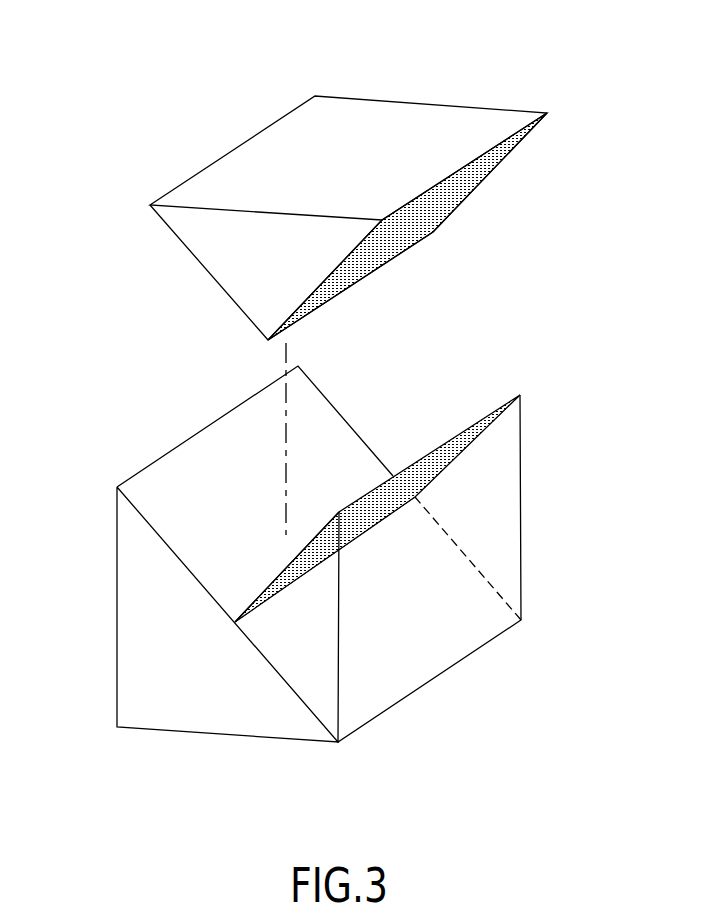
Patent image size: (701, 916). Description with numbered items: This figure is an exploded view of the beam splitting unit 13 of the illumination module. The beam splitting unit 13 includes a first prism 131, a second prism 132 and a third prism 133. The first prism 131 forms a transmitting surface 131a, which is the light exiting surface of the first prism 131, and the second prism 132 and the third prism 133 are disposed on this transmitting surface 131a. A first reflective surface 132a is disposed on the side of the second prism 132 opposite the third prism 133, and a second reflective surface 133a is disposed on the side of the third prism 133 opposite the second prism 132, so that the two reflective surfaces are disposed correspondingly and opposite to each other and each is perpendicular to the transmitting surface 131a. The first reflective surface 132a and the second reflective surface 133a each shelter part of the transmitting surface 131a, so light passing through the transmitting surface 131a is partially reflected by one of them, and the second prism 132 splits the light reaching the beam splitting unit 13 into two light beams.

The beam splitting unit 13 is at (119, 63).
The second prism 132 is at (398, 113).
The first reflective surface 132a is at (457, 210).
The first prism 131 is at (115, 647).
The transmitting surface 131a is at (214, 452).
The third prism 133 is at (450, 660).
The second reflective surface 133a is at (413, 485).